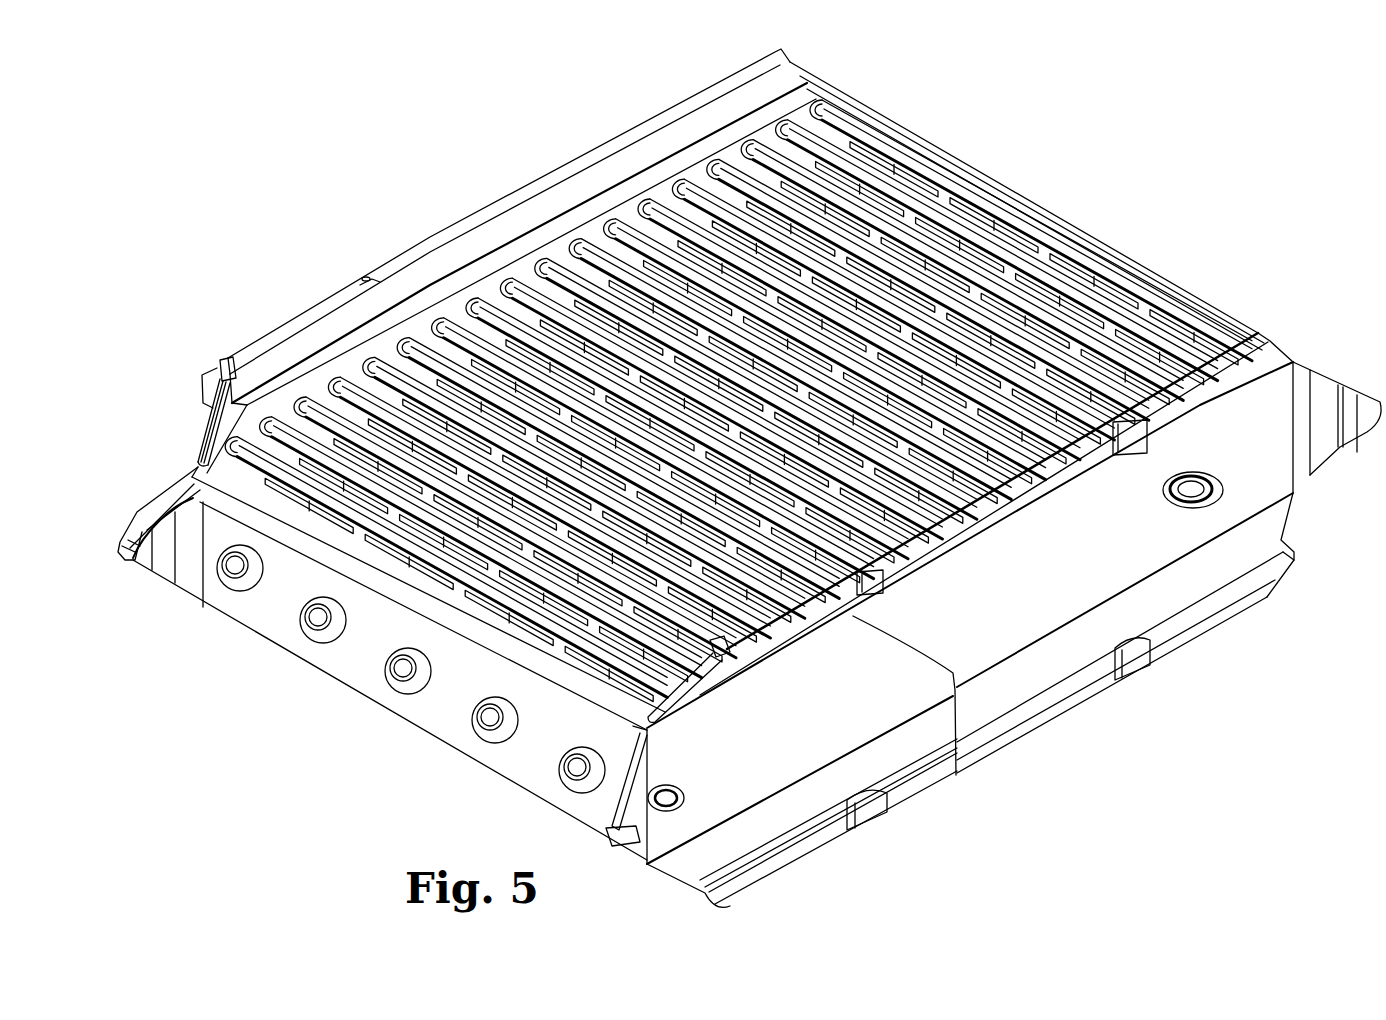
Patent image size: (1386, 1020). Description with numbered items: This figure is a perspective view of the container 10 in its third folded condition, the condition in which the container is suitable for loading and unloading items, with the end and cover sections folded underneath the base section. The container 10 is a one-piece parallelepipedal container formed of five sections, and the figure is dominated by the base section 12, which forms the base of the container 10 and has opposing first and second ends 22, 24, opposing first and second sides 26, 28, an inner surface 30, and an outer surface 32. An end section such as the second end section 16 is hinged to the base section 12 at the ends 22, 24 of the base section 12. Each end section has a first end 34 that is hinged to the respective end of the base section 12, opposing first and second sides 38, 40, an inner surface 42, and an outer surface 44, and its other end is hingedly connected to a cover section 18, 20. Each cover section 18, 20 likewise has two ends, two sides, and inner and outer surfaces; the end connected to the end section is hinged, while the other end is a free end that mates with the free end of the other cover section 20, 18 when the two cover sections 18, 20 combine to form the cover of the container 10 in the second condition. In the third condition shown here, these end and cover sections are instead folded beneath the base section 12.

The container 10 is at (1159, 173).
The base section 12 is at (533, 237).
The second end section 16 is at (285, 617).
The cover section 18 is at (1091, 583).
The cover section 20 is at (811, 735).
The first end of the base section 22 is at (793, 62).
The second end of the base section 24 is at (218, 459).
The first side of the base section 26 is at (450, 283).
The second side of the base section 28 is at (843, 602).
The inner surface of the base section 30 is at (970, 437).
The outer surface of the base section 32 is at (1070, 493).
The first end of the end section 34 is at (440, 680).
The first side of the end section 38 is at (160, 557).
The second side of the end section 40 is at (593, 798).
The inner surface of the end section 42 is at (352, 656).
The outer surface of the end section 44 is at (648, 763).